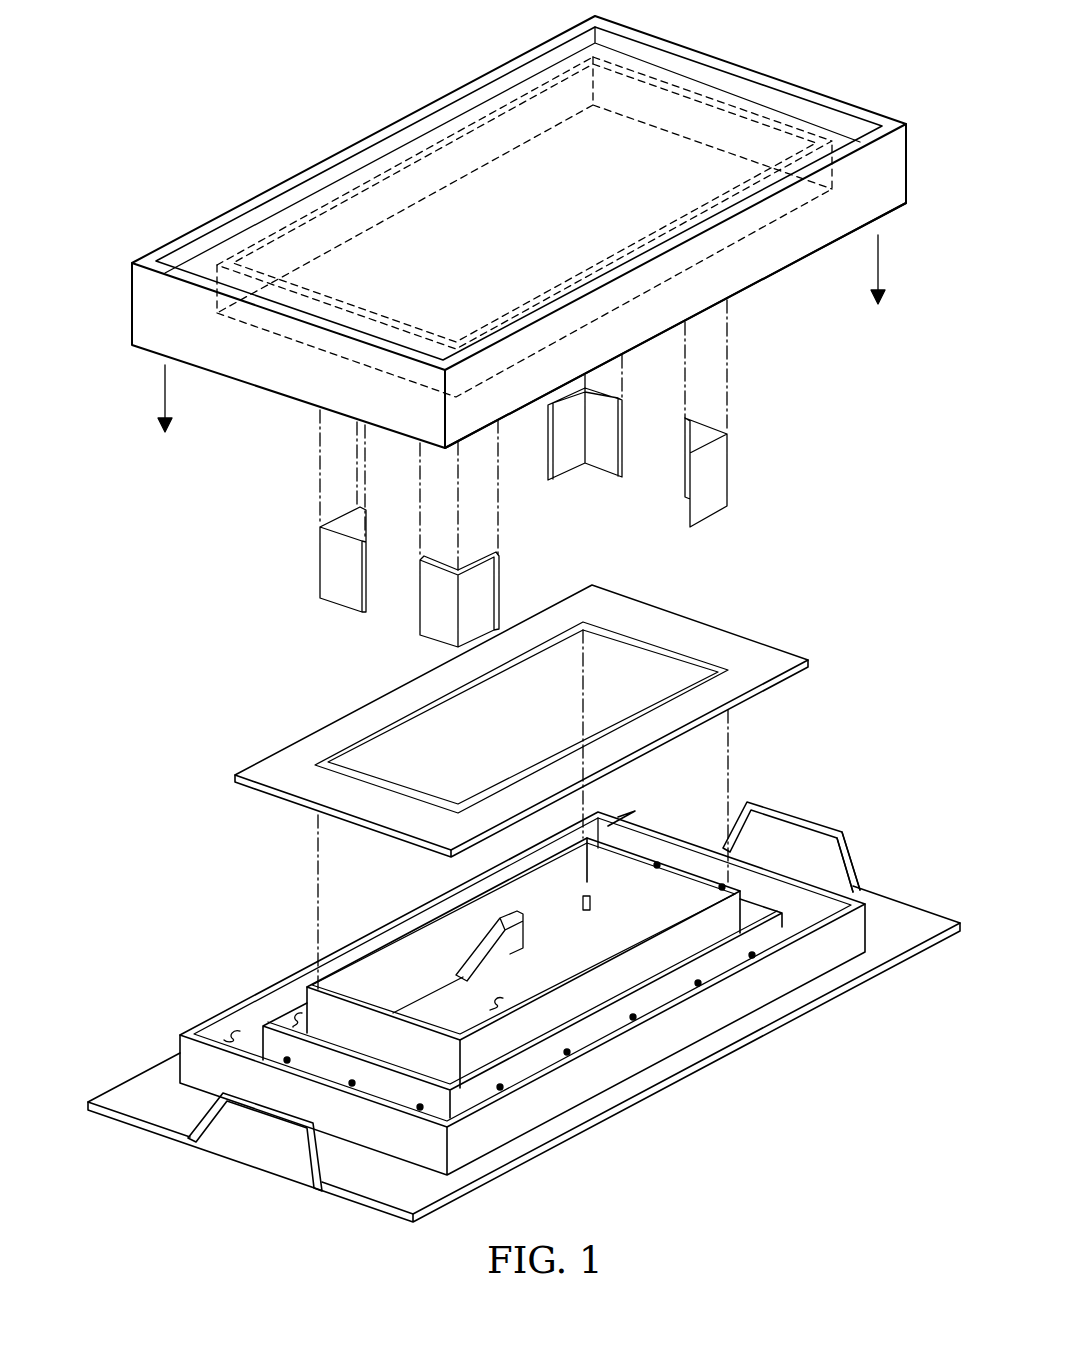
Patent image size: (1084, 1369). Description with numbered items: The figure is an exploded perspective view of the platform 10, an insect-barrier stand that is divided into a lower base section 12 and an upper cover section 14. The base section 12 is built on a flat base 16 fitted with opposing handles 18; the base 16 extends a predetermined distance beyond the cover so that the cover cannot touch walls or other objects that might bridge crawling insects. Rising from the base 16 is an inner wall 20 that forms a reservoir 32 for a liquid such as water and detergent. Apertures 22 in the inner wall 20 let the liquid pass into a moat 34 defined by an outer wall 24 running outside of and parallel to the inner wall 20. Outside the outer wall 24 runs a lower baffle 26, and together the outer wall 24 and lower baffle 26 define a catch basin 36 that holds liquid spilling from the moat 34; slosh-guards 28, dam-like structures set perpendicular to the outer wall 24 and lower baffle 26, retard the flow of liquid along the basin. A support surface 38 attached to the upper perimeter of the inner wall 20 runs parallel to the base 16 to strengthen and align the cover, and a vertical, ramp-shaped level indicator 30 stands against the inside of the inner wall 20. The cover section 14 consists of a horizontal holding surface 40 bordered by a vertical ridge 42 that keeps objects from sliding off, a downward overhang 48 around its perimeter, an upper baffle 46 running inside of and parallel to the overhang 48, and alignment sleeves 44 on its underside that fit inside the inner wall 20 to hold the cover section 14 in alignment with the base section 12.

The platform 10 is at (519, 225).
The base section 12 is at (846, 717).
The cover section 14 is at (778, 421).
The base 16 is at (170, 1102).
The handles 18 is at (273, 1115).
The inner wall 20 is at (413, 983).
The apertures 22 is at (590, 906).
The outer wall 24 is at (640, 998).
The lower baffle 26 is at (757, 977).
The slosh-guards 28 is at (828, 870).
The level indicator 30 is at (510, 948).
The reservoir 32 is at (499, 1003).
The moat 34 is at (297, 1012).
The catch basin 36 is at (240, 1040).
The support surface 38 is at (657, 627).
The holding surface 40 is at (393, 267).
The ridge 42 is at (233, 212).
The alignment sleeves 44 is at (715, 450).
The upper baffle 46 is at (530, 123).
The overhang 48 is at (760, 253).